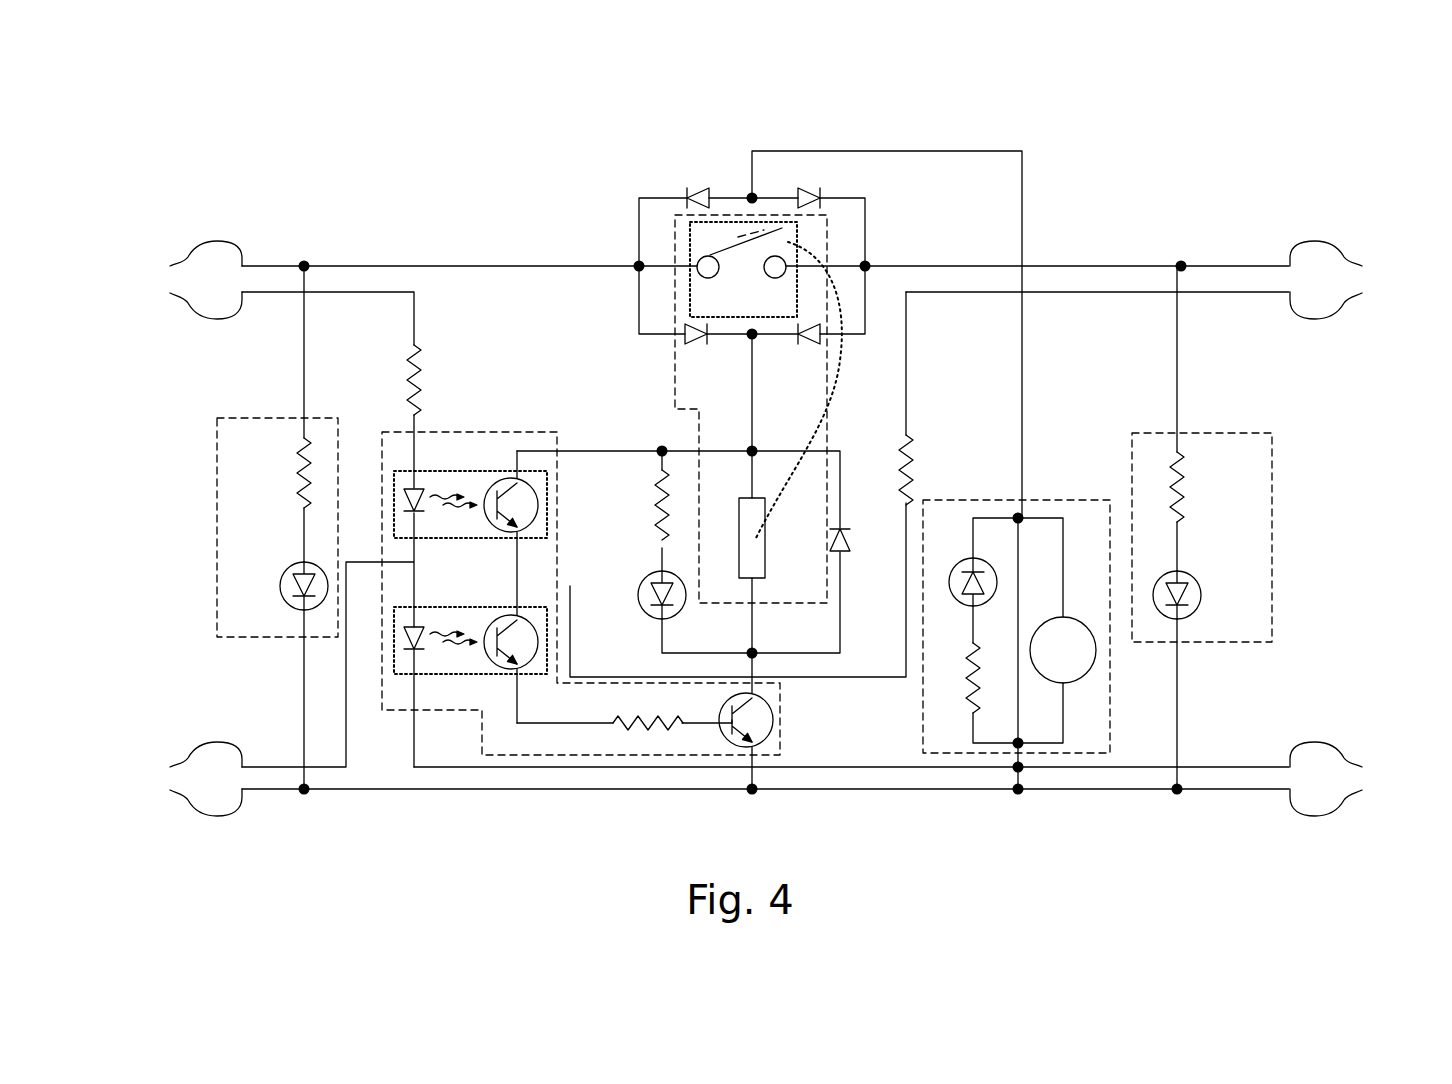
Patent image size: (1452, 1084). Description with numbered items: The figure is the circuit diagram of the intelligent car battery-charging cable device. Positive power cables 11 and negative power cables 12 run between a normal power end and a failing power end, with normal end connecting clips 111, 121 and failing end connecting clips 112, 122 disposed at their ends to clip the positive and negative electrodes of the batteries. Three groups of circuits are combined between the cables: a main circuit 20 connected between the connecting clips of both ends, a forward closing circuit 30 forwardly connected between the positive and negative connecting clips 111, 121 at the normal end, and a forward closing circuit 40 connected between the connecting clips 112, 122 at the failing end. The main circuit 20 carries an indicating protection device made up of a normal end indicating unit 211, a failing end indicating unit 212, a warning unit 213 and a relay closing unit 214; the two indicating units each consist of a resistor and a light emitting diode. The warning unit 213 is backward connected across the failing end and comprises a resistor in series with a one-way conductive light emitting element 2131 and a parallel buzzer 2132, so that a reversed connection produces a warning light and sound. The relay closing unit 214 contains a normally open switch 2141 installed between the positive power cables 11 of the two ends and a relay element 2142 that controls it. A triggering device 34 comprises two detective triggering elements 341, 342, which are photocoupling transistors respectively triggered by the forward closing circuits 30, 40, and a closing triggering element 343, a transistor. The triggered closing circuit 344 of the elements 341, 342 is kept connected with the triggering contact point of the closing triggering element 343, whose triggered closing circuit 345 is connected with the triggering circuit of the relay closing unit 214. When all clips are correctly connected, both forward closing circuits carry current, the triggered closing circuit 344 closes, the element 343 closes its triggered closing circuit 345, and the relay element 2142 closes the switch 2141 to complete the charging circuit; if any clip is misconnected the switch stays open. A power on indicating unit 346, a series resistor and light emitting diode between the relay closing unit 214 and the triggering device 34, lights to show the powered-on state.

The positive power cables 11 is at (353, 340).
The negative power cables 12 is at (500, 790).
The main circuit 20 is at (1098, 240).
The forward closing circuit 30 is at (370, 748).
The triggering device 34 is at (468, 432).
The forward closing circuit 40 is at (1098, 292).
The normal end connecting clip 111 is at (195, 279).
The failing end connecting clip 112 is at (1337, 279).
The normal end connecting clip 121 is at (195, 778).
The failing end connecting clip 122 is at (1337, 778).
The normal end indicating unit 211 is at (217, 498).
The failing end indicating unit 212 is at (1272, 503).
The warning unit 213 is at (1078, 497).
The one-way conductive light emitting element 2131 is at (965, 557).
The buzzer 2132 is at (1080, 645).
The relay closing unit 214 is at (829, 432).
The normally open switch 2141 is at (767, 247).
The relay element 2142 is at (758, 560).
The detective triggering element 341 is at (518, 503).
The detective triggering element 342 is at (508, 665).
The closing triggering element 343 is at (750, 717).
The triggered closing circuit 344 is at (518, 707).
The triggered closing circuit 345 is at (748, 757).
The power on indicating unit 346 is at (665, 612).